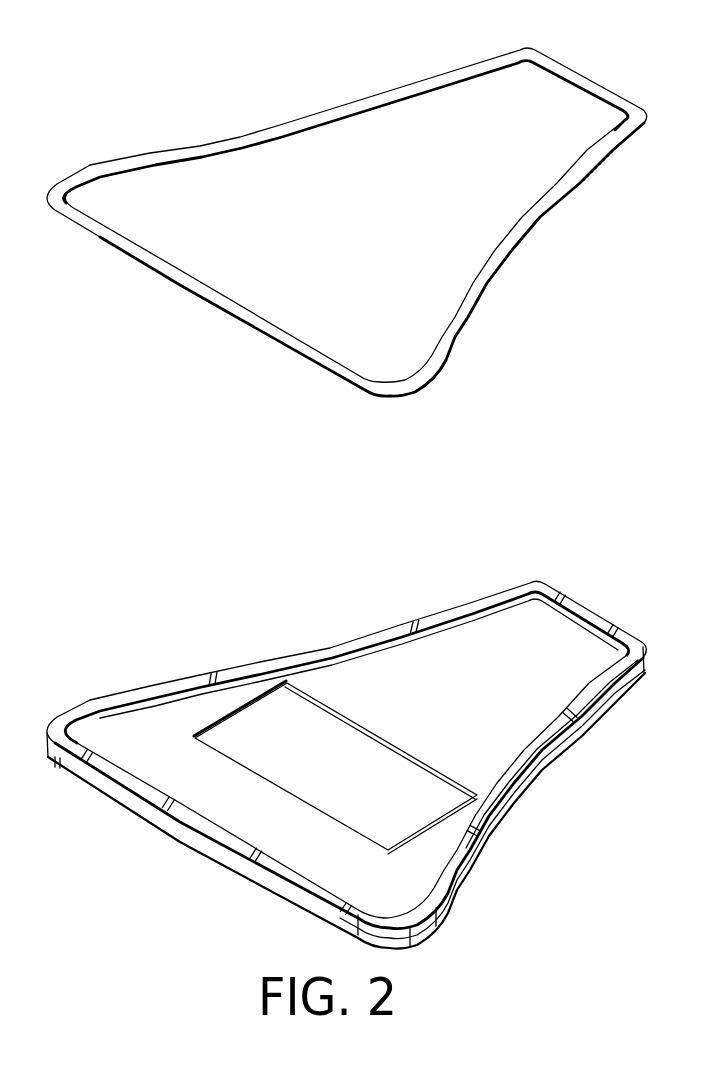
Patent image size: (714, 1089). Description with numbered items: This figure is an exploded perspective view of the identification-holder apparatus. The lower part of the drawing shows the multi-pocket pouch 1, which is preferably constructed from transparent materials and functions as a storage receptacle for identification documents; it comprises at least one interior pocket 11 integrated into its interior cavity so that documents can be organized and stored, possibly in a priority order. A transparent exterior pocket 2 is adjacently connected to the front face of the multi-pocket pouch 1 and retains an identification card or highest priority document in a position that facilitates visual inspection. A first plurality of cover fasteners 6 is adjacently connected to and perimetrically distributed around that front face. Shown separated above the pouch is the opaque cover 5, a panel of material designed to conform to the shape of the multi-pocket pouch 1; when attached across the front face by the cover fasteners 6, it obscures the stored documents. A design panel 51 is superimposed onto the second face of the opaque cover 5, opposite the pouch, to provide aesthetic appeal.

The multi-pocket pouch 1 is at (278, 563).
The transparent exterior pocket 2 is at (380, 735).
The opaque cover 5 is at (600, 86).
The design panel 51 is at (528, 98).
The first plurality of cover fasteners 6 is at (212, 673).
The interior pocket 11 is at (188, 840).